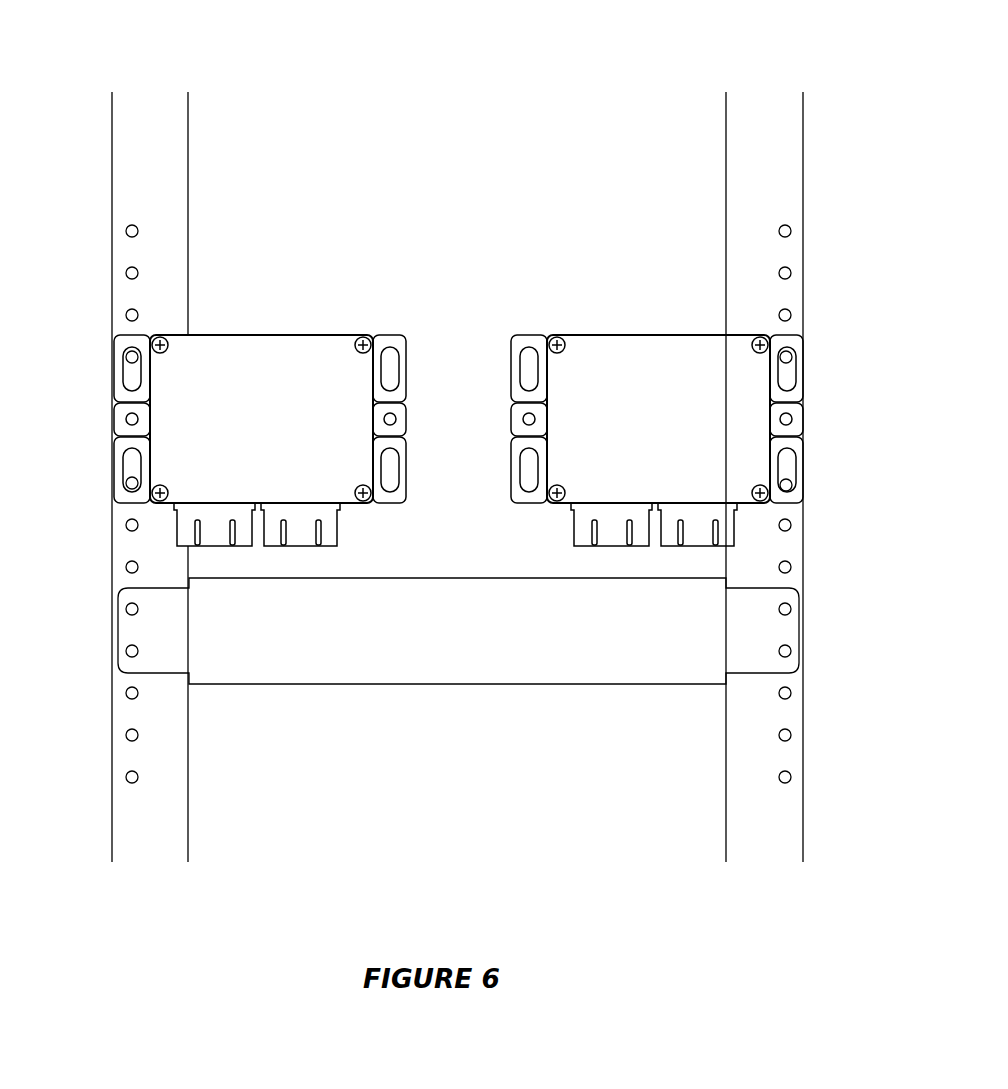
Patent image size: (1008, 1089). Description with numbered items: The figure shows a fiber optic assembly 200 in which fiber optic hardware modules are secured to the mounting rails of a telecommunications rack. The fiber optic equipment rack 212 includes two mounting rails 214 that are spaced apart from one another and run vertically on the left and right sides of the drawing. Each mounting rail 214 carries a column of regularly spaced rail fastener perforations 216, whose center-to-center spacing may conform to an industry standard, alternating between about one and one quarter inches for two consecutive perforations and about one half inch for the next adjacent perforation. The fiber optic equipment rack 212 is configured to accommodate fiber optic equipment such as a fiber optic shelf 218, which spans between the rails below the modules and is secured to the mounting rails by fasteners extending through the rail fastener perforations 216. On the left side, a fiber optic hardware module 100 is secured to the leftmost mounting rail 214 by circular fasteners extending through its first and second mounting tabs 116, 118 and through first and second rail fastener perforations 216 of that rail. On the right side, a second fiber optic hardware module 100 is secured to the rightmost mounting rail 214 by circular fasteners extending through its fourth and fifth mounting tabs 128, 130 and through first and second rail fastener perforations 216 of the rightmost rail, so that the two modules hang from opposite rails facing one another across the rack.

The fiber optic assembly 200 is at (140, 47).
The fiber optic equipment rack 212 is at (528, 243).
The mounting rail 214 is at (157, 195).
The rail fastener perforation 216 is at (128, 271).
The fiber optic shelf 218 is at (508, 663).
The fiber optic hardware module 100 is at (463, 420).
The second mounting tab 118 is at (117, 360).
The first mounting tab 116 is at (117, 470).
The fifth mounting tab 130 is at (798, 372).
The fourth mounting tab 128 is at (795, 467).